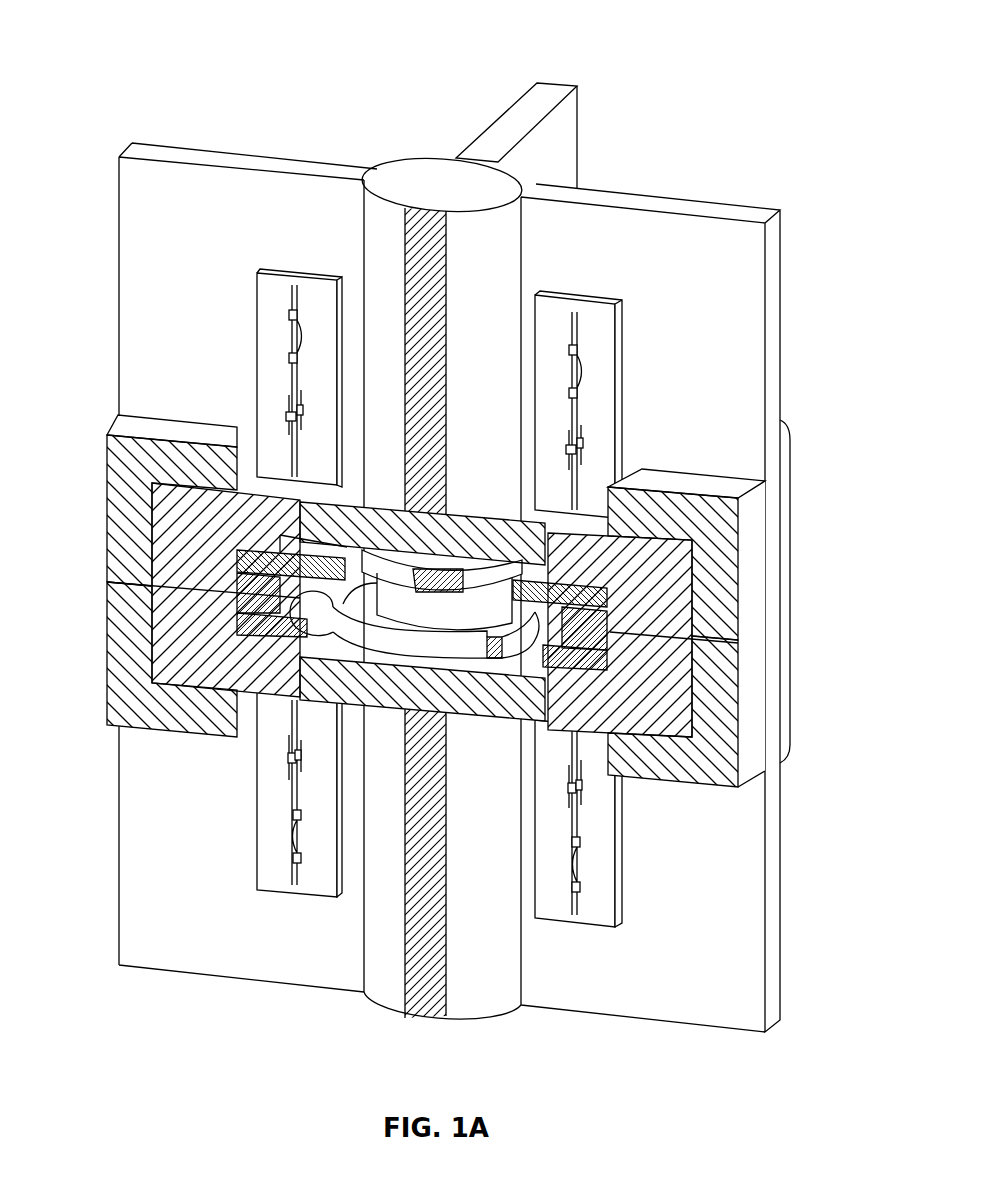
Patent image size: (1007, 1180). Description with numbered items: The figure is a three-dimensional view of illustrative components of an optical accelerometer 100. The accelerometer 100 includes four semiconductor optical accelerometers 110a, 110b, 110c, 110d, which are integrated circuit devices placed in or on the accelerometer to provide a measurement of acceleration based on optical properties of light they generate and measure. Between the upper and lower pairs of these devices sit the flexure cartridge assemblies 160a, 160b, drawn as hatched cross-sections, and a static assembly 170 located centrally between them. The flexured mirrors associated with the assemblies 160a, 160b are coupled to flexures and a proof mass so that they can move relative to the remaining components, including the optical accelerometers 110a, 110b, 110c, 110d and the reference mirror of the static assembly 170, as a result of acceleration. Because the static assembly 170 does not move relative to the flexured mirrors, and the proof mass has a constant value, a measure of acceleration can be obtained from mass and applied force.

The optical accelerometer 100 is at (138, 43).
The semiconductor optical accelerometer 110a is at (268, 293).
The semiconductor optical accelerometer 110b is at (607, 407).
The semiconductor optical accelerometer 110c is at (270, 787).
The semiconductor optical accelerometer 110d is at (600, 900).
The flexure cartridge assembly 160a is at (527, 542).
The flexure cartridge assembly 160b is at (565, 720).
The static assembly 170 is at (165, 607).